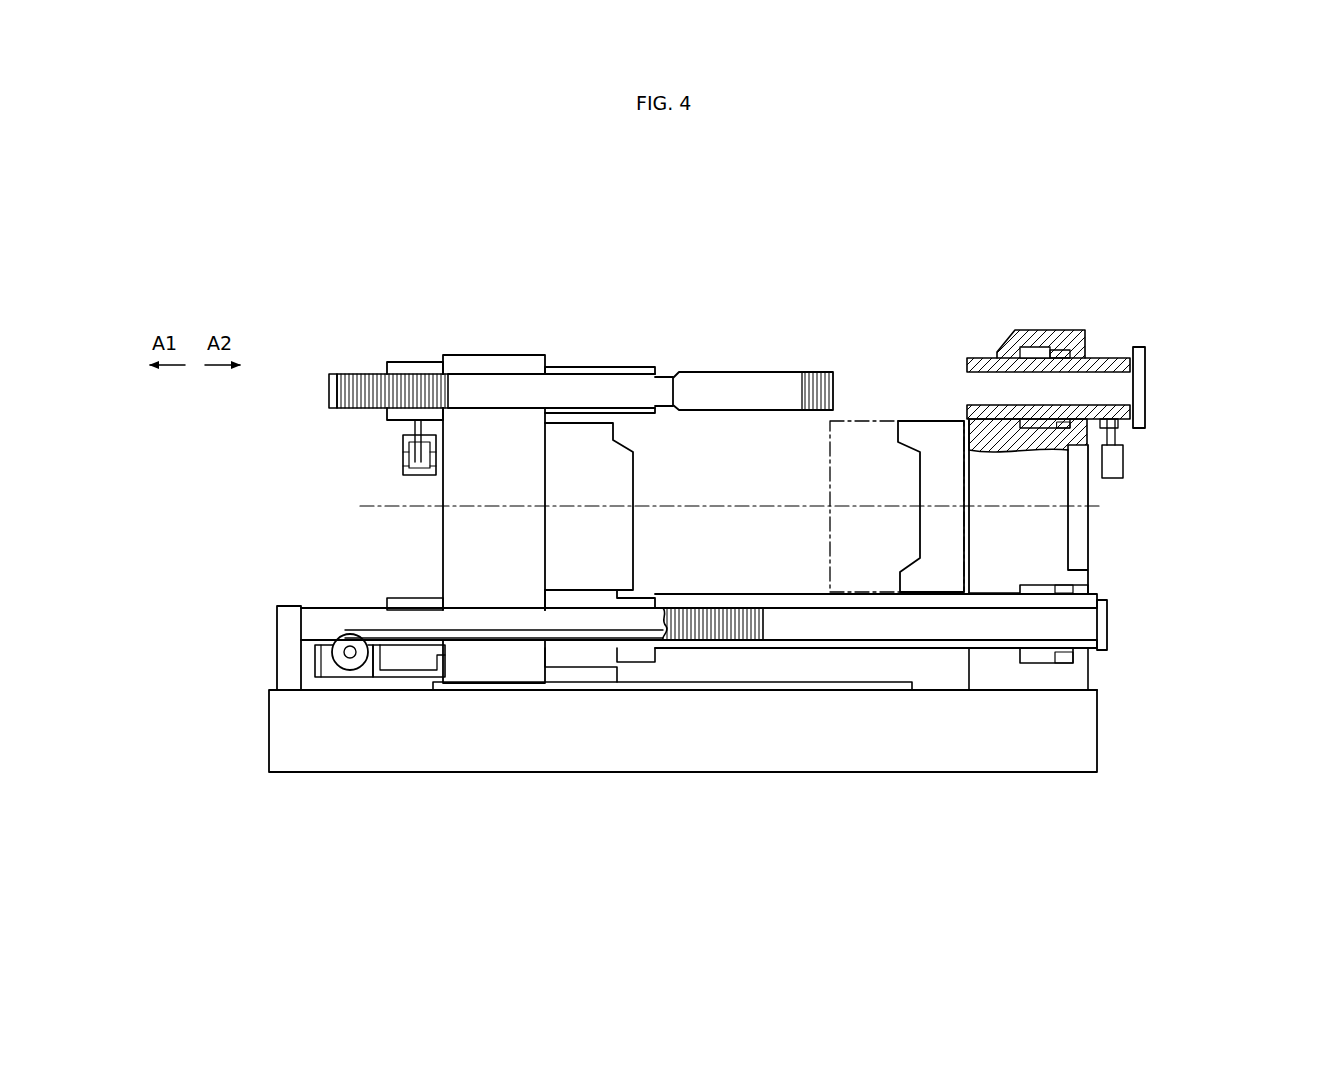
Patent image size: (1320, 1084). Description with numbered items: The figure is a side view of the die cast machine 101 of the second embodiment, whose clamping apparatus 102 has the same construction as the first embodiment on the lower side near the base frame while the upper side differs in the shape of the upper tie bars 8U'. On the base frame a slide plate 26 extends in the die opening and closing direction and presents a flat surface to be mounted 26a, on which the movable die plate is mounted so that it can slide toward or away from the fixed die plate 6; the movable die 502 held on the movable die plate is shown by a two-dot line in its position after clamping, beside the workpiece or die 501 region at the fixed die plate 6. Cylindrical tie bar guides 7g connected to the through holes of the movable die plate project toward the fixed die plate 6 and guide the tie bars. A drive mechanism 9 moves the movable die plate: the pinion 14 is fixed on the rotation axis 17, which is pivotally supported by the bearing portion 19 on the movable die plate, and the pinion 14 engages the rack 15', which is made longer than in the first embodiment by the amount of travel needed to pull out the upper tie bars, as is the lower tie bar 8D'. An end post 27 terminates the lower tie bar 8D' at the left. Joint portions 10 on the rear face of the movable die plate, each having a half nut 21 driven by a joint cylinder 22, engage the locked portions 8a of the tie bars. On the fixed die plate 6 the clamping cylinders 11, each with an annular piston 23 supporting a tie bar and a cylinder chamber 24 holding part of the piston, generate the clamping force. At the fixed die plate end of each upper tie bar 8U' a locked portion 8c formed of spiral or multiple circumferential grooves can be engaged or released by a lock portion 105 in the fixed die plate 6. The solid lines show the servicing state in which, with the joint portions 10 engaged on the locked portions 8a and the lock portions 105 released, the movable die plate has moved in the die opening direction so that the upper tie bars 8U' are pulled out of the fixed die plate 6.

The die cast machine 101 is at (678, 168).
The joint portion 10 is at (482, 330).
The clamping apparatus 102 is at (580, 338).
The tie bar guide 7g is at (620, 366).
The upper tie bar 8U' is at (640, 345).
The locked portion 8c is at (815, 372).
The locked portion 8a is at (377, 373).
The half nut 21 is at (411, 362).
The joint cylinder 22 is at (403, 446).
The movable die 502 is at (633, 447).
The work piece 501 is at (935, 421).
The annular piston 23 is at (1033, 350).
The cylinder chamber 24 is at (1058, 350).
The clamping cylinder 11 is at (1098, 312).
The lock portion 105 is at (1155, 352).
The fixed die plate 6 is at (1080, 580).
The lower tie bar 8D' is at (742, 622).
The end post 27 is at (290, 653).
The rotation axis 17 is at (345, 672).
The pinion 14 is at (357, 680).
The bearing portion 19 is at (408, 683).
The rack 15' is at (504, 733).
The slide plate 26 is at (765, 690).
The surface to be mounted 26a is at (795, 684).
The drive mechanism 9 is at (328, 700).